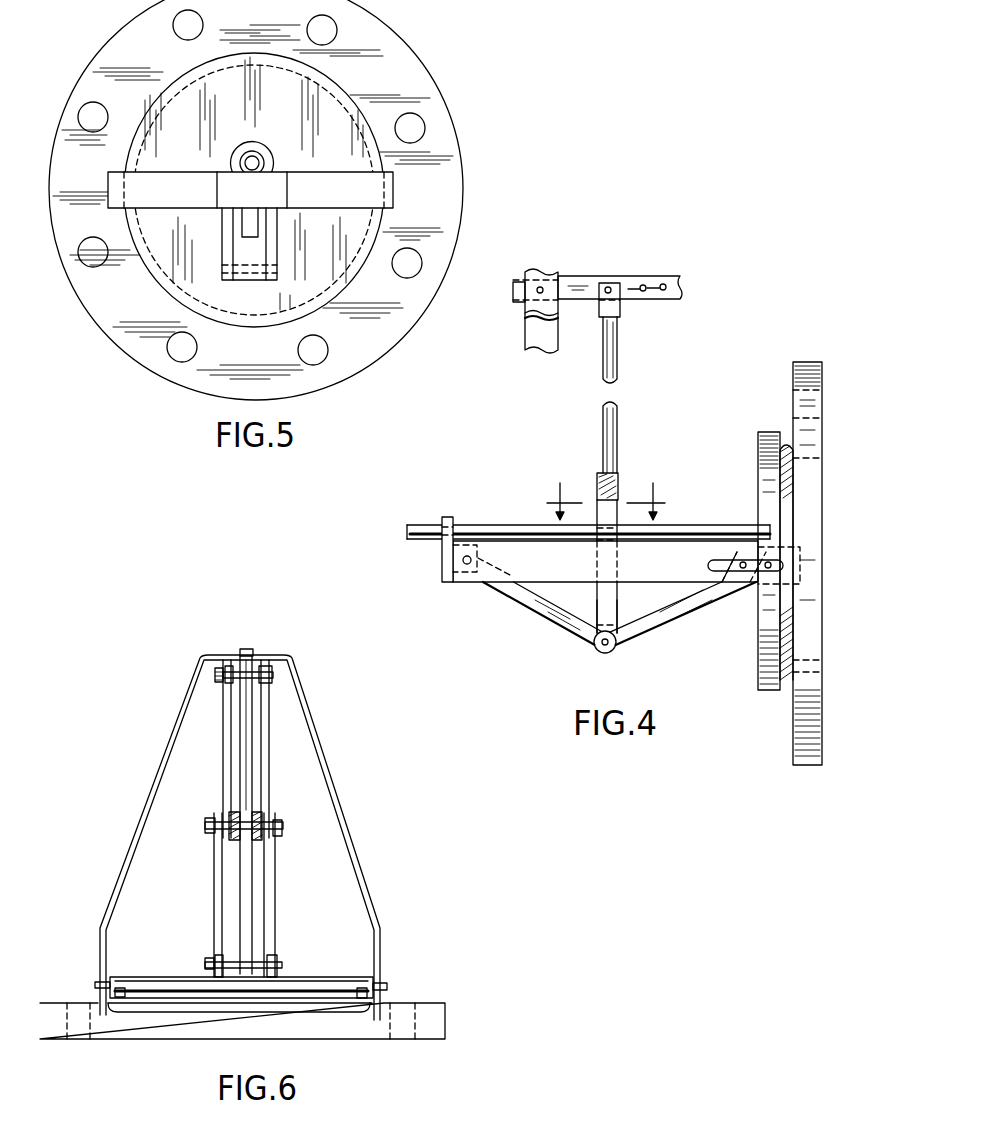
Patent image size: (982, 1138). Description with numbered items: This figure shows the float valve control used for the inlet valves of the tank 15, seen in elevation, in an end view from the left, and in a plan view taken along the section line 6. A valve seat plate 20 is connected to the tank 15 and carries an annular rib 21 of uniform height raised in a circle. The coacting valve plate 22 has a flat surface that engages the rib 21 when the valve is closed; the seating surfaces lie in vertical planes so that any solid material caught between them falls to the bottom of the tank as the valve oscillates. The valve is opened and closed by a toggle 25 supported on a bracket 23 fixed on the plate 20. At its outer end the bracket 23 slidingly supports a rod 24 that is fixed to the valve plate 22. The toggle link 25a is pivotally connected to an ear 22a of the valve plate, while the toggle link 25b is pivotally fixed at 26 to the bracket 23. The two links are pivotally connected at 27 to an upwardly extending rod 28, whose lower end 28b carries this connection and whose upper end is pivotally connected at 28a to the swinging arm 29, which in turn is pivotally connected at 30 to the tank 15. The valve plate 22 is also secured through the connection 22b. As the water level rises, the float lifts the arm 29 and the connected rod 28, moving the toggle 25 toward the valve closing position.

In FIG. 4, the tank 15 is at (528, 334).
In FIG. 5, the valve seat plate 20 is at (383, 42).
In FIG. 4, the valve seat plate 20 is at (813, 408).
In FIG. 6, the valve seat plate 20 is at (57, 1026).
In FIG. 4, the annular rib 21 is at (790, 505).
In FIG. 6, the annular rib 21 is at (153, 1012).
In FIG. 5, the valve plate 22 is at (337, 115).
In FIG. 4, the valve plate 22 is at (765, 463).
In FIG. 6, the valve plate 22 is at (330, 978).
In FIG. 4, the ear 22a is at (700, 594).
In FIG. 6, the ear 22a is at (228, 952).
In FIG. 4, the slotted ring bolt 22b is at (785, 566).
In FIG. 6, the slotted ring bolt 22b is at (388, 987).
In FIG. 5, the bracket 23 is at (343, 180).
In FIG. 4, the bracket 23 is at (528, 557).
In FIG. 6, the bracket 23 is at (308, 720).
In FIG. 5, the rod 24 is at (262, 152).
In FIG. 4, the rod 24 is at (418, 526).
In FIG. 6, the rod 24 is at (250, 650).
In FIG. 4, the toggle 25 is at (598, 648).
In FIG. 5, the link 25a is at (214, 223).
In FIG. 4, the link 25a is at (640, 632).
In FIG. 6, the link 25a is at (215, 898).
In FIG. 5, the toggle link 25b is at (248, 222).
In FIG. 4, the toggle link 25b is at (512, 595).
In FIG. 6, the toggle link 25b is at (222, 776).
In FIG. 4, the pivot 26 is at (453, 565).
In FIG. 6, the pivot 26 is at (278, 677).
In FIG. 4, the pivotal connection 27 is at (606, 650).
In FIG. 6, the pivotal connection 27 is at (284, 825).
In FIG. 4, the rod 28 is at (612, 418).
In FIG. 4, the pivotal connection 28a is at (608, 286).
In FIG. 5, the rod lower end 28b is at (268, 281).
In FIG. 4, the rod lower end 28b is at (610, 596).
In FIG. 4, the swinging arm 29 is at (655, 278).
In FIG. 4, the pivot 30 is at (541, 286).
In FIG. 4, the section line of FIG. 6 is at (606, 488).